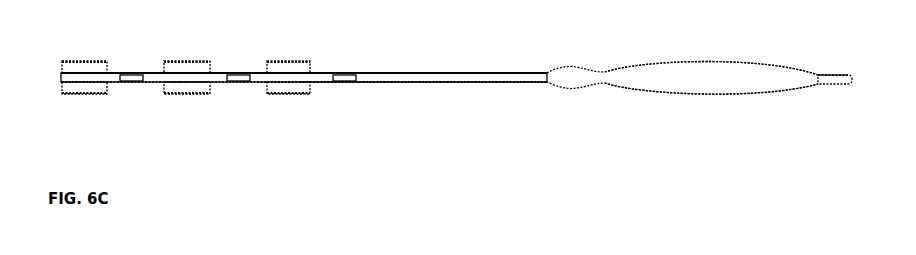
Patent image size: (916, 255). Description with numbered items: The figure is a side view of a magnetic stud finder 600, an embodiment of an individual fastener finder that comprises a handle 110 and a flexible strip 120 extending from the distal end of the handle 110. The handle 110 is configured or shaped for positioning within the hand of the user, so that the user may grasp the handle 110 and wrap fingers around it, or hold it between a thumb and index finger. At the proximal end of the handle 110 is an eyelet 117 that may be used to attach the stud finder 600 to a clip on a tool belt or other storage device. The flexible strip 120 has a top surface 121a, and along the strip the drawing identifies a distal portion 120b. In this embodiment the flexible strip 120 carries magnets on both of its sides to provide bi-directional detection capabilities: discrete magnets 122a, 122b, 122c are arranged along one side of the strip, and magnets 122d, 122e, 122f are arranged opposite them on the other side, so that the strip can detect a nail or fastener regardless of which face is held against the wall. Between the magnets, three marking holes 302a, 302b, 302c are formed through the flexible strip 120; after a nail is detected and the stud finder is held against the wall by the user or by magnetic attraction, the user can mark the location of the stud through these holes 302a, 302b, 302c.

The flexible strip 120 is at (304, 47).
The shaft distal portion 120b is at (449, 43).
The top surface 121a is at (440, 112).
The magnet 122a is at (322, 45).
The magnet 122b is at (221, 45).
The magnet 122c is at (118, 45).
The electrode 122d is at (337, 126).
The electrode 122e is at (219, 126).
The electrode 122f is at (109, 126).
The marking hole 302a is at (160, 104).
The marking hole 302b is at (266, 104).
The marking hole 302c is at (372, 104).
The handle 110 is at (711, 61).
The magnetic stud finder 600 is at (682, 56).
The eyelet 117 is at (860, 66).